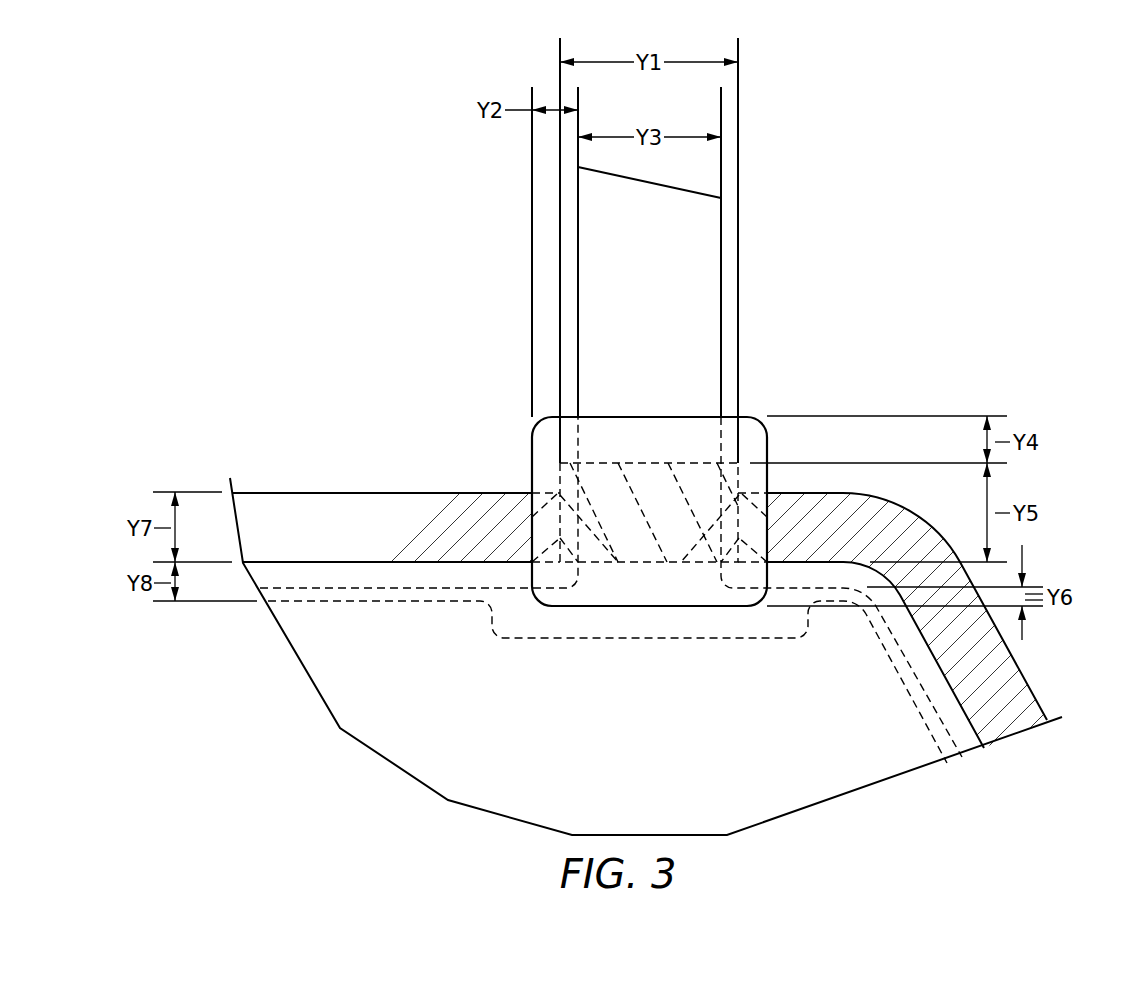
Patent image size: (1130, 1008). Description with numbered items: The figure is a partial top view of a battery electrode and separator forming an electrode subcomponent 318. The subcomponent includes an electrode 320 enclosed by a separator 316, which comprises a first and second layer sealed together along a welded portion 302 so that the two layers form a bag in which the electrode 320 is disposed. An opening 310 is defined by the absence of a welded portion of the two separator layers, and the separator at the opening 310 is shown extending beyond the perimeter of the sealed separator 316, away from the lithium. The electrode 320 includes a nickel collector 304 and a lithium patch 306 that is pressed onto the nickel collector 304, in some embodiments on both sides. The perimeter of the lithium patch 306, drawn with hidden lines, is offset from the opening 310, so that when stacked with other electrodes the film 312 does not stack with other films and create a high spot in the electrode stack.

The welded portion 302 is at (487, 508).
The nickel collector 304 is at (382, 586).
The lithium patch 306 is at (442, 601).
The opening 310 is at (637, 545).
The film 312 is at (745, 415).
The separator 316 is at (370, 502).
The electrode subcomponent 318 is at (317, 213).
The electrode 320 is at (433, 760).